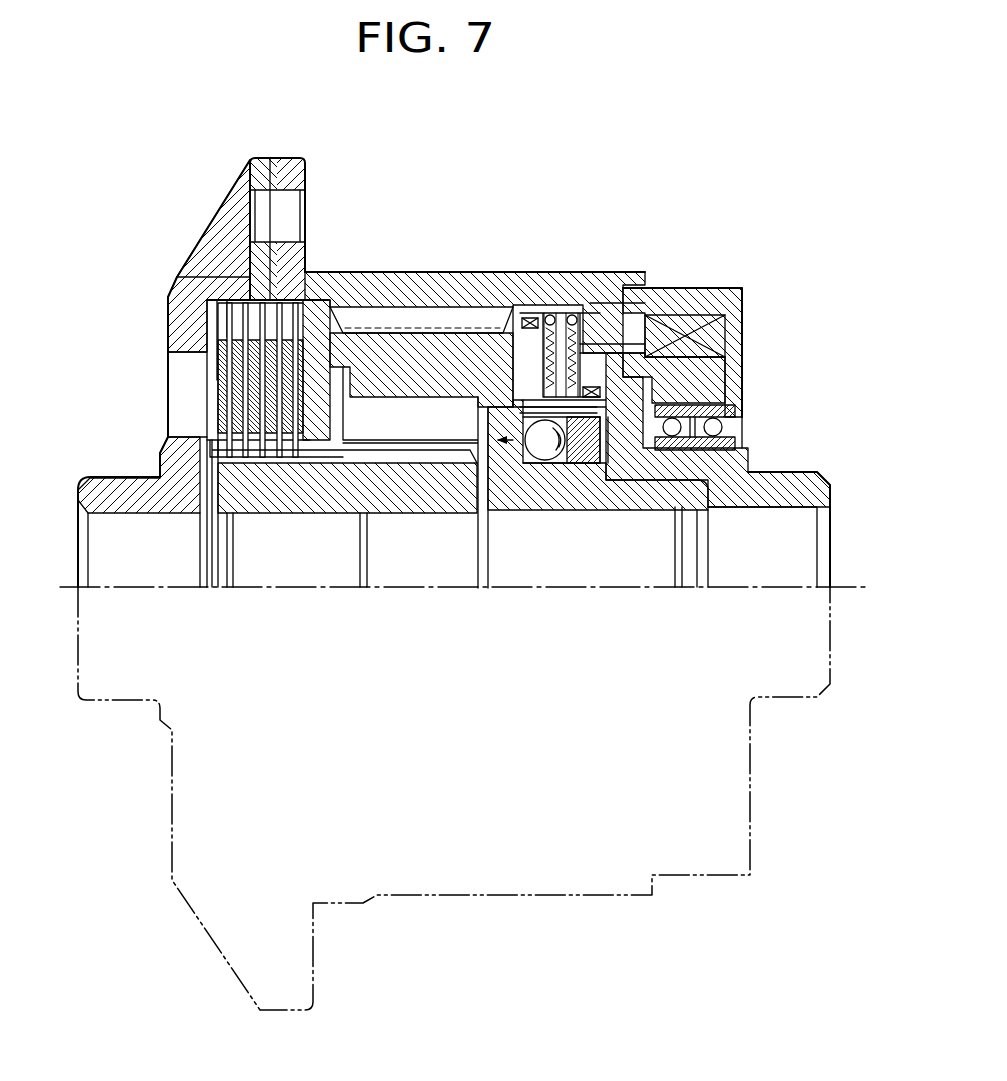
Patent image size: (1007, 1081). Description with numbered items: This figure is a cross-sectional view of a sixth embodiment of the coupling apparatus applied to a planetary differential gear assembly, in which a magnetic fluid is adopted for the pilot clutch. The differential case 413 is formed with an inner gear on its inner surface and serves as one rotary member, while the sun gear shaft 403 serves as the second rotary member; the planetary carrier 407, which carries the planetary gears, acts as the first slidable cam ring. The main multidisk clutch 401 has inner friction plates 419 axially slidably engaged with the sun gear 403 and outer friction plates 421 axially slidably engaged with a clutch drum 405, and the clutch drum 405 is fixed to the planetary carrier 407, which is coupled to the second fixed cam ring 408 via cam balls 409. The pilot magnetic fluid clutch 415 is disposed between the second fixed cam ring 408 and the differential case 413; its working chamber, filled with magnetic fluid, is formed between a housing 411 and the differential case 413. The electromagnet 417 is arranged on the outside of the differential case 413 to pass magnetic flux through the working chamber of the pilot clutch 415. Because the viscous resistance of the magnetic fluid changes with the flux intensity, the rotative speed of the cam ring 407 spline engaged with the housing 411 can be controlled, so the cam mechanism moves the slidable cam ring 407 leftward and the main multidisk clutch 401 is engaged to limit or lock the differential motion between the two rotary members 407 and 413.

The main multidisk clutch 401 is at (196, 403).
The sun gear shaft 403 is at (261, 498).
The clutch drum 405 is at (316, 312).
The planetary carrier 407 is at (522, 486).
The second fixed cam ring 408 is at (593, 465).
The cam balls 409 is at (545, 461).
The housing 411 is at (538, 355).
The differential case 413 is at (507, 272).
The pilot magnetic fluid clutch 415 is at (585, 350).
The electromagnet 417 is at (738, 290).
The inner friction plates 419 is at (295, 450).
The outer friction plates 421 is at (233, 323).